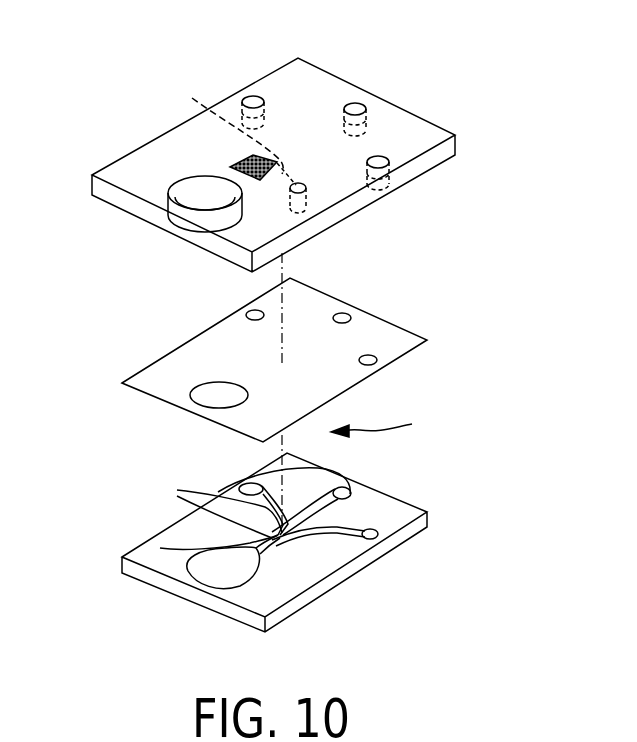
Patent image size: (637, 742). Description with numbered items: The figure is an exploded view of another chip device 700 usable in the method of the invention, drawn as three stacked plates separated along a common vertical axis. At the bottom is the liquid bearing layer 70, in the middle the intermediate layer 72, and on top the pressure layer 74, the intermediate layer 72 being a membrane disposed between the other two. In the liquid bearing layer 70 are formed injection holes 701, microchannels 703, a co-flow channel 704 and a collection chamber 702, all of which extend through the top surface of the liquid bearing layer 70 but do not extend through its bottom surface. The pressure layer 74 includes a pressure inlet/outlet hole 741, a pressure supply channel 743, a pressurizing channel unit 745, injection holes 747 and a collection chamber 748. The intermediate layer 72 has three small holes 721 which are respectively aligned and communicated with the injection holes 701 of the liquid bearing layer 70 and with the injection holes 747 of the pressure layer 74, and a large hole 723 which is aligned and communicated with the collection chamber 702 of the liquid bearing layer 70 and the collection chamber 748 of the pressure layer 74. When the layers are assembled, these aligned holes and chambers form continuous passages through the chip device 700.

The chip device 700 is at (394, 423).
The liquid bearing layer 70 is at (300, 602).
The injection holes 701 is at (369, 535).
The collection chamber 702 is at (205, 577).
The microchannels 703 is at (240, 503).
The co-flow channel 704 is at (160, 548).
The intermediate layer 72 is at (328, 388).
The small holes 721 is at (257, 312).
The large hole 723 is at (192, 395).
The pressure layer 74 is at (320, 220).
The pressure inlet/outlet hole 741 is at (306, 187).
The pressure supply channel 743 is at (233, 126).
The pressurizing channel unit 745 is at (235, 160).
The injection holes 747 is at (254, 101).
The collection chamber 748 is at (203, 203).